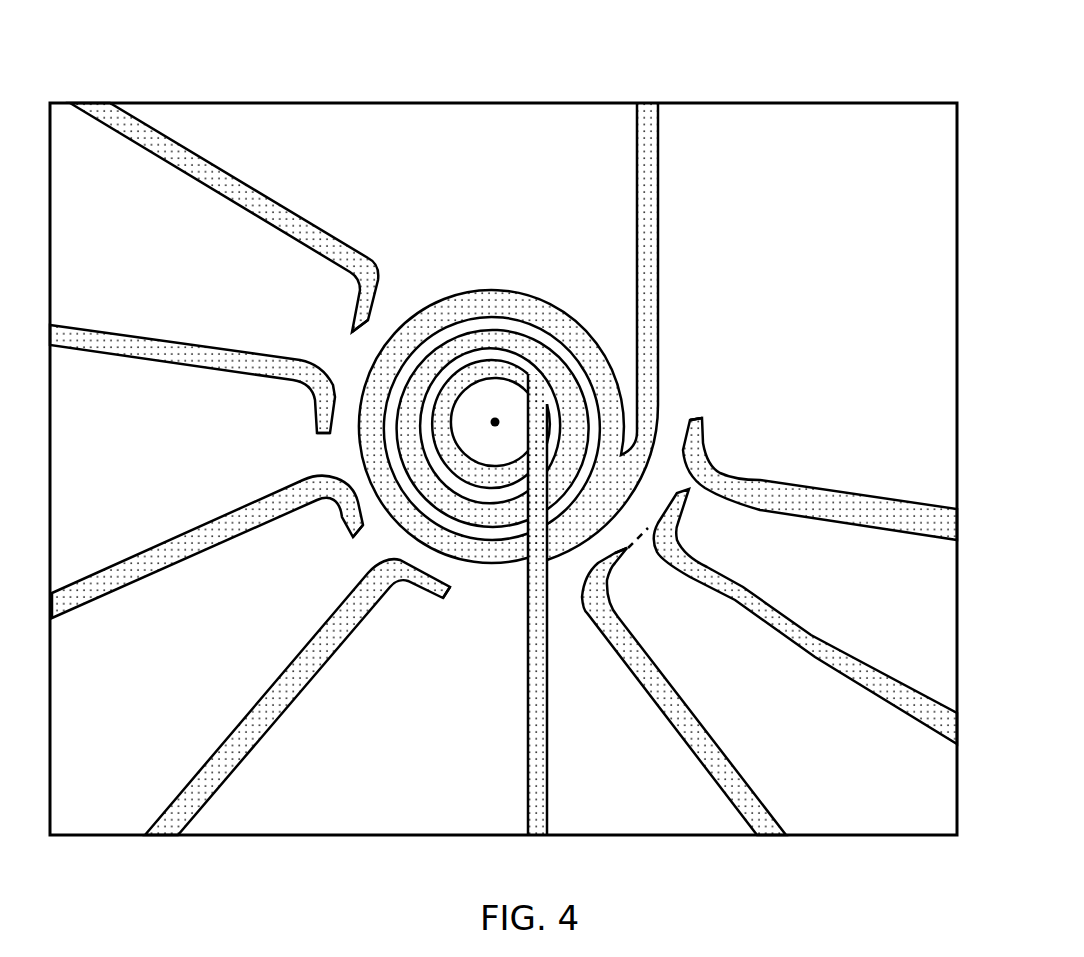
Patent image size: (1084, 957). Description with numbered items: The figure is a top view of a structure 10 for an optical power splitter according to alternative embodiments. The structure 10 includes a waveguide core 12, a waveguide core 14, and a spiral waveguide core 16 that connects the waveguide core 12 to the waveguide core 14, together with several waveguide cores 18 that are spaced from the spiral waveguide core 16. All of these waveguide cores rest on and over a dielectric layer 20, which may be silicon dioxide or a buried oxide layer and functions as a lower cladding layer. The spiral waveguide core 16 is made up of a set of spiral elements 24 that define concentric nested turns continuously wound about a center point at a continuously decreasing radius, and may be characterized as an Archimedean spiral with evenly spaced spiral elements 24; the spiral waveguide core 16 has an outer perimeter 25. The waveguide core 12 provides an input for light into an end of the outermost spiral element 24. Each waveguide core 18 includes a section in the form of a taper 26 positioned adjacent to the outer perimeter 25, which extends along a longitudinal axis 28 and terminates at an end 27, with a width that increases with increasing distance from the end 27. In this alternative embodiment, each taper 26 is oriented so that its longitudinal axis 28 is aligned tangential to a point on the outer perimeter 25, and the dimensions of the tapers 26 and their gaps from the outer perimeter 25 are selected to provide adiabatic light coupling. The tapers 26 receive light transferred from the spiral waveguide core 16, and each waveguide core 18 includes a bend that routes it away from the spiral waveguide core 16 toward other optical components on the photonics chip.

The structure 10 is at (156, 84).
The waveguide core 12 is at (652, 190).
The waveguide core 14 is at (540, 770).
The spiral waveguide core 16 is at (529, 469).
The waveguide cores 18 is at (228, 328).
The dielectric layer 20 is at (100, 779).
The spiral elements 24 is at (498, 431).
The outer perimeter 25 is at (488, 565).
The taper 26 is at (320, 417).
The end 27 is at (700, 416).
The longitudinal axis 28 is at (620, 556).